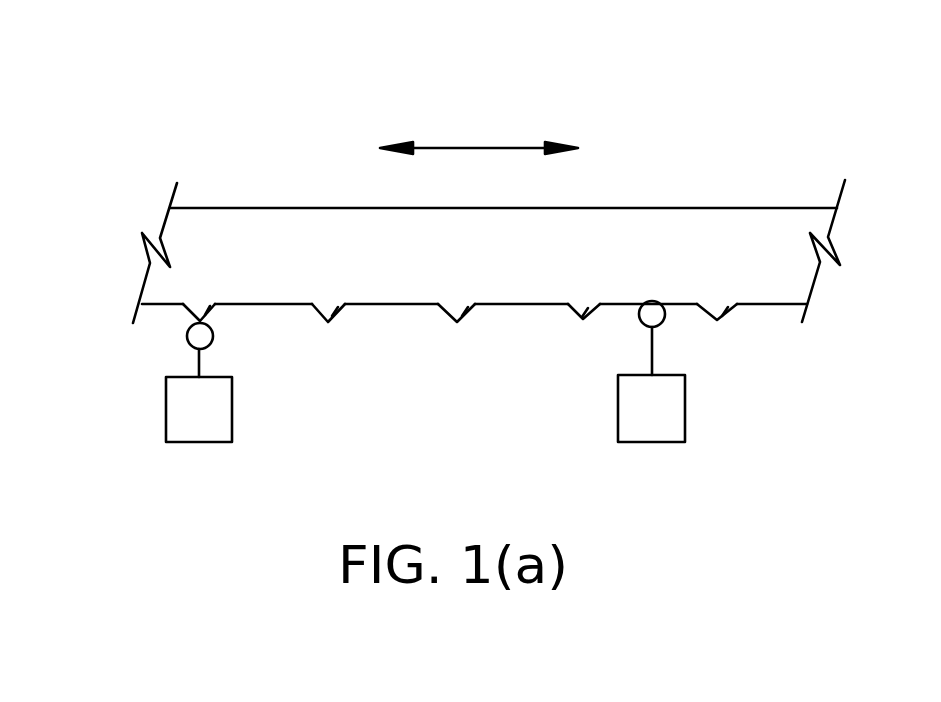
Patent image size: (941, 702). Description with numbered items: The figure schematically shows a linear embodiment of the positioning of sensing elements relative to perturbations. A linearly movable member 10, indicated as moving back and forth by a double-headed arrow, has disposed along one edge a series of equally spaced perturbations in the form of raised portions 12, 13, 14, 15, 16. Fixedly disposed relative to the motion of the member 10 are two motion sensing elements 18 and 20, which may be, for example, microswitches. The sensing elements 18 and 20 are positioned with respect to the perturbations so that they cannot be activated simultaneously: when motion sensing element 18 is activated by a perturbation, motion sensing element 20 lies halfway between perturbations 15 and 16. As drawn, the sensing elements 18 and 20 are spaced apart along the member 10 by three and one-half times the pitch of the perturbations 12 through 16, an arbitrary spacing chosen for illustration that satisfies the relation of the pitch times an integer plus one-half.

The linearly movable member 10 is at (562, 245).
The raised portion 12 is at (210, 313).
The raised portion 13 is at (338, 313).
The raised portion 14 is at (467, 313).
The raised portion 15 is at (583, 318).
The raised portion 16 is at (728, 312).
The motion sensing element 18 is at (182, 410).
The motion sensing element 20 is at (643, 415).